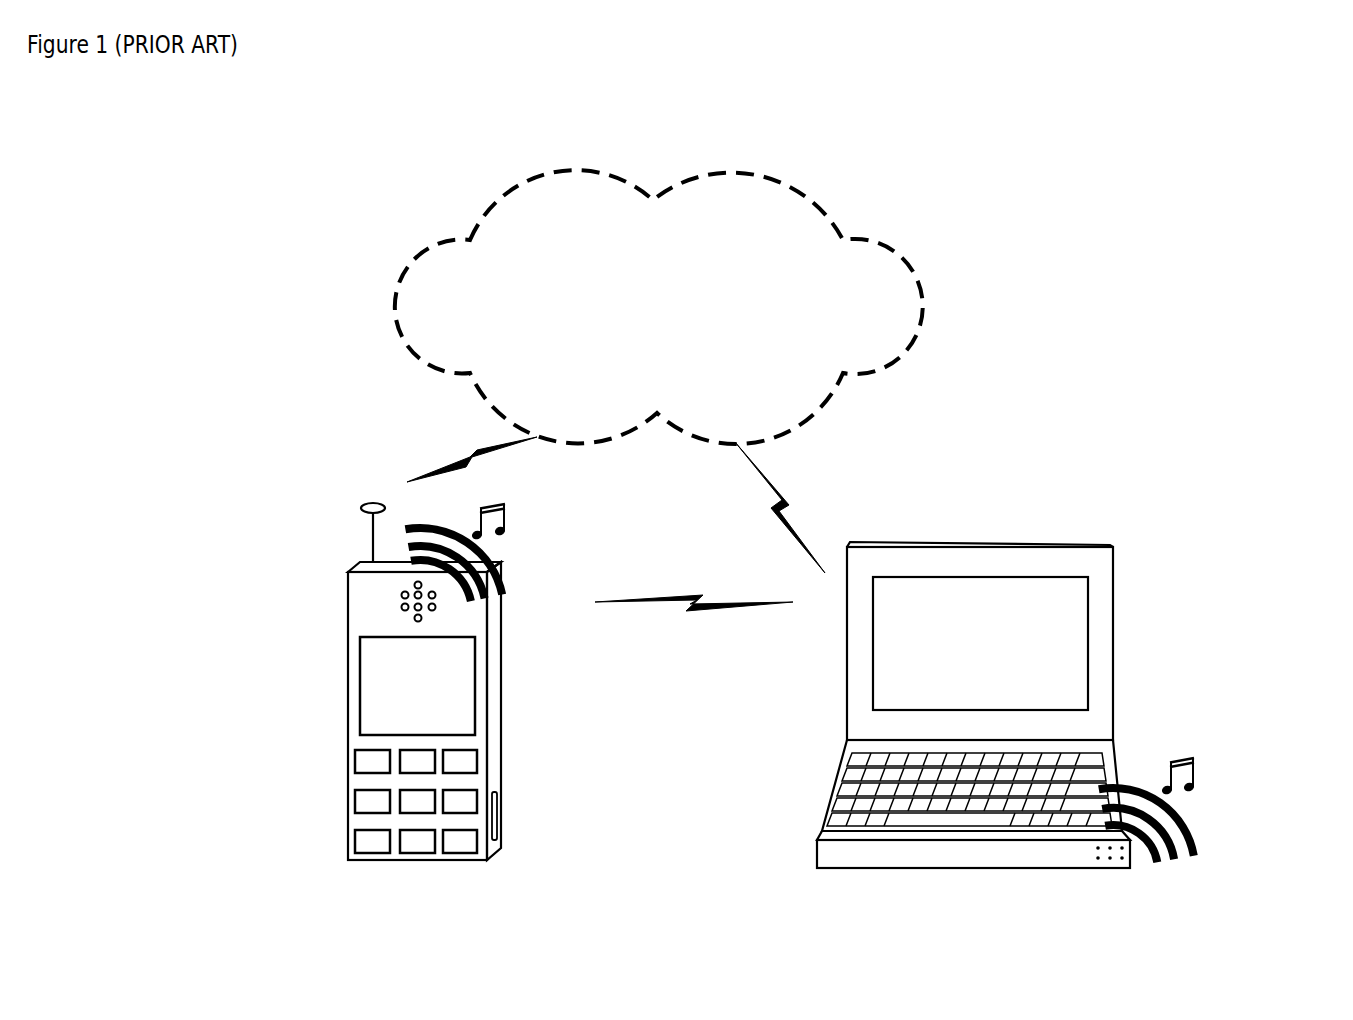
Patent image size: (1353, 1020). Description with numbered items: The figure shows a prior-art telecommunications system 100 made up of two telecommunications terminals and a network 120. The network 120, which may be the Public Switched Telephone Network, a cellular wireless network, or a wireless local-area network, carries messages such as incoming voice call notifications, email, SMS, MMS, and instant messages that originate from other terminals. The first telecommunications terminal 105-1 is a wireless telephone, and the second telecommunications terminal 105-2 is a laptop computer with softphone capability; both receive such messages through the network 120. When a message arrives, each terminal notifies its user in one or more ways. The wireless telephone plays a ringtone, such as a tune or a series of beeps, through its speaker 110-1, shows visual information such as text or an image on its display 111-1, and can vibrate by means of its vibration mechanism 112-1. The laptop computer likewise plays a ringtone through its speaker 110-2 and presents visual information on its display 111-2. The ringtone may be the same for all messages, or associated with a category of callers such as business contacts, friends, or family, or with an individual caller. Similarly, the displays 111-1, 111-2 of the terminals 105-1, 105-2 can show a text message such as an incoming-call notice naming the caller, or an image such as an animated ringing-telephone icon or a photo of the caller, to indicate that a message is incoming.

The telecommunications system 100 is at (888, 145).
The network 120 is at (692, 307).
The telecommunications terminal 105-1 is at (453, 705).
The speaker 110-1 is at (372, 576).
The display 111-1 is at (472, 687).
The vibration mechanism 112-1 is at (552, 823).
The telecommunications terminal 105-2 is at (973, 729).
The speaker 110-2 is at (1162, 834).
The display 111-2 is at (915, 643).